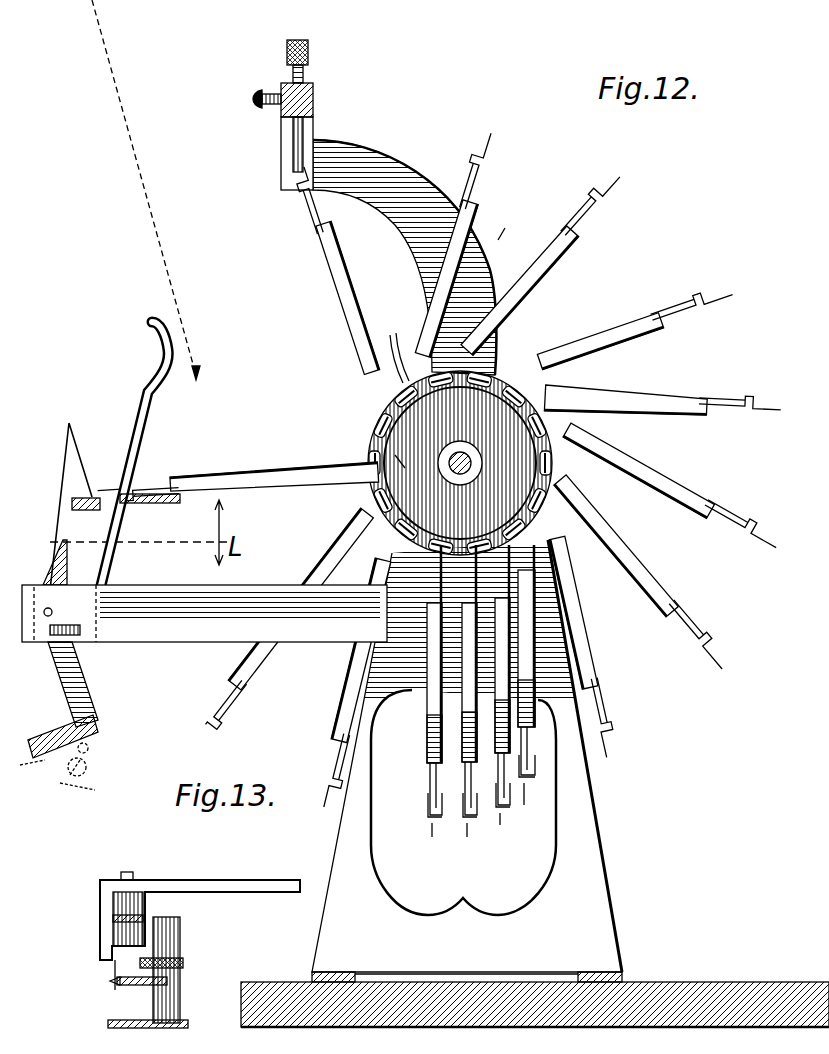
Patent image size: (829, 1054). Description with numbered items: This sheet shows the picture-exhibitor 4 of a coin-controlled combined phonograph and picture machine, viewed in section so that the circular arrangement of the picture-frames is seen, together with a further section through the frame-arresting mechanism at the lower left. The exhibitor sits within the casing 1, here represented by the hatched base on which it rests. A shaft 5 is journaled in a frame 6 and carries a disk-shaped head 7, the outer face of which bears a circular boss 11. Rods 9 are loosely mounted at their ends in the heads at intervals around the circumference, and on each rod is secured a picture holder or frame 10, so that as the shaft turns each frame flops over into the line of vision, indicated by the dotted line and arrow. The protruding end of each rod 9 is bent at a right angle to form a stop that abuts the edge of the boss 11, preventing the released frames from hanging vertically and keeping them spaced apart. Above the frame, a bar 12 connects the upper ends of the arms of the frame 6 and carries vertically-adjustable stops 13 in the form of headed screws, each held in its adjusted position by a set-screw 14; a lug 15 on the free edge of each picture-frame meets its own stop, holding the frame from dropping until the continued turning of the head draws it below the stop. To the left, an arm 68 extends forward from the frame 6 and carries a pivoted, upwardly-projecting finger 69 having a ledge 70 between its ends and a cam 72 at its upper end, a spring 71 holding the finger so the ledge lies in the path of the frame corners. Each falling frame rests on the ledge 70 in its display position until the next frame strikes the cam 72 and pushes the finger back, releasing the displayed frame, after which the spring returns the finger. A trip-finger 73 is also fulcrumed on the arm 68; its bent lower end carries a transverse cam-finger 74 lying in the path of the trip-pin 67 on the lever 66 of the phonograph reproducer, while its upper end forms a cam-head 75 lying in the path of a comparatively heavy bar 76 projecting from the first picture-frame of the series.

In FIG. 12, the casing 1 is at (708, 982).
In FIG. 12, the picture-exhibitor 4 is at (510, 222).
In FIG. 12, the shaft 5 is at (456, 461).
In FIG. 12, the frame 6 is at (394, 162).
In FIG. 12, the disk-shaped head 7 is at (383, 418).
In FIG. 12, the rod 9 is at (395, 344).
In FIG. 12, the picture holder or frame 10 is at (345, 302).
In FIG. 12, the circular boss 11 is at (403, 463).
In FIG. 12, the bar 12 is at (313, 99).
In FIG. 12, the vertically-adjustable stop 13 is at (294, 40).
In FIG. 12, the set-screw 14 is at (256, 95).
In FIG. 12, the lug 15 is at (318, 172).
In FIG. 12, the lever of the reproducer mechanism 66 is at (86, 772).
In FIG. 12, the trip-pin 67 is at (75, 768).
In FIG. 12, the arm 68 is at (170, 600).
In FIG. 13, the arm 68 is at (220, 880).
In FIG. 12, the finger 69 is at (107, 578).
In FIG. 13, the finger 69 is at (165, 950).
In FIG. 12, the ledge 70 is at (125, 505).
In FIG. 12, the spring 71 is at (60, 668).
In FIG. 13, the spring 71 is at (115, 983).
In FIG. 12, the cam 72 is at (170, 361).
In FIG. 12, the trip-finger 73 is at (58, 546).
In FIG. 13, the trip-finger 73 is at (113, 917).
In FIG. 12, the cam-finger 74 is at (96, 740).
In FIG. 13, the cam-finger 74 is at (160, 1022).
In FIG. 12, the cam-head 75 is at (70, 458).
In FIG. 12, the heavy bar 76 is at (84, 524).